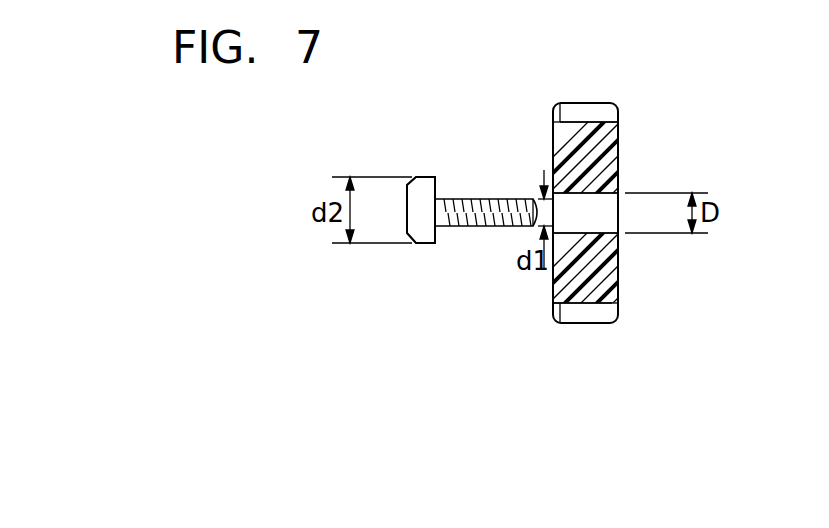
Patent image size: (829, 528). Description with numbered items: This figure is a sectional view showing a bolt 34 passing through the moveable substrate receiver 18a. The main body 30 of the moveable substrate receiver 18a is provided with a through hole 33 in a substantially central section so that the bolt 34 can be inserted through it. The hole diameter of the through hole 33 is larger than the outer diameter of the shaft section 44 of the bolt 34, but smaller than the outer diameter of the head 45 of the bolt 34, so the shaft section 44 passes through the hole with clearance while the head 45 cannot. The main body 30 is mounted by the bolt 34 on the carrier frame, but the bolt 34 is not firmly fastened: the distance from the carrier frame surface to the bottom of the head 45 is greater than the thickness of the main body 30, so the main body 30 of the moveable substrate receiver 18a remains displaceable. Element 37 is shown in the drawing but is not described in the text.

The moveable substrate receiver 18a is at (590, 88).
The main body 30 is at (601, 313).
The through hole 33 is at (598, 193).
The bolt 34 is at (427, 176).
The inner rim portion 37 is at (558, 314).
The shaft section 44 is at (480, 199).
The head 45 is at (427, 243).